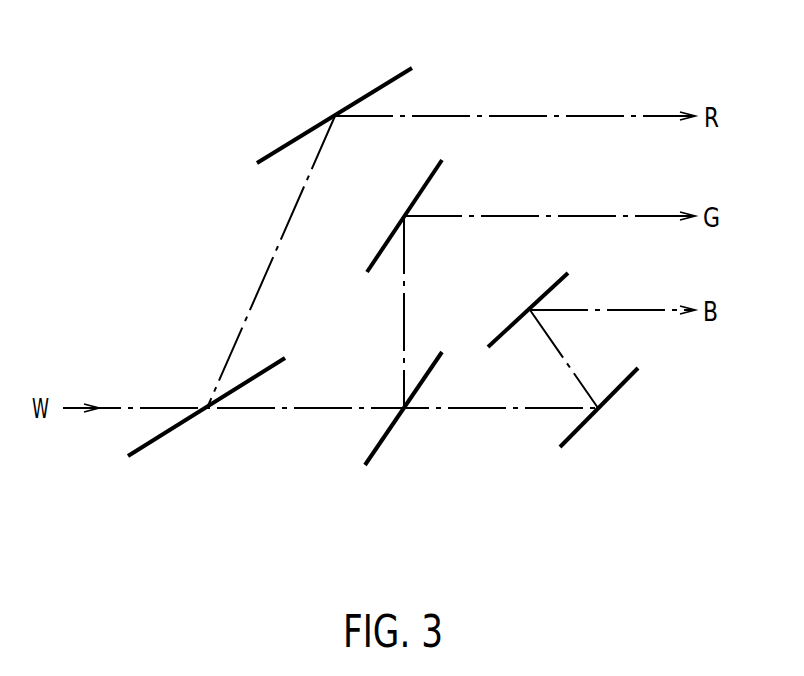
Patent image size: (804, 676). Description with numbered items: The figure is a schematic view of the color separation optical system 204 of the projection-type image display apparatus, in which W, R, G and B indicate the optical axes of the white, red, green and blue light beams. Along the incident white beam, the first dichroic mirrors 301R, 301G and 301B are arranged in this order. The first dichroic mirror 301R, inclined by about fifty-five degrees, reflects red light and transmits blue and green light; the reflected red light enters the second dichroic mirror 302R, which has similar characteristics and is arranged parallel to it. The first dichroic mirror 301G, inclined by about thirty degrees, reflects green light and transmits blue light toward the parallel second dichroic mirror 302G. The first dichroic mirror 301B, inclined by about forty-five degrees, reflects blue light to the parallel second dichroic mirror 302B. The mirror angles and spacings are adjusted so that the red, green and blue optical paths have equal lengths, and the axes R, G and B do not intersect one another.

The color separation optical system 204 is at (228, 132).
The first dichroic mirror 301R is at (160, 437).
The first dichroic mirror 301G is at (378, 445).
The first dichroic mirror 301B is at (575, 432).
The second dichroic mirror 302R is at (400, 78).
The second dichroic mirror 302G is at (430, 176).
The second dichroic mirror 302B is at (555, 284).